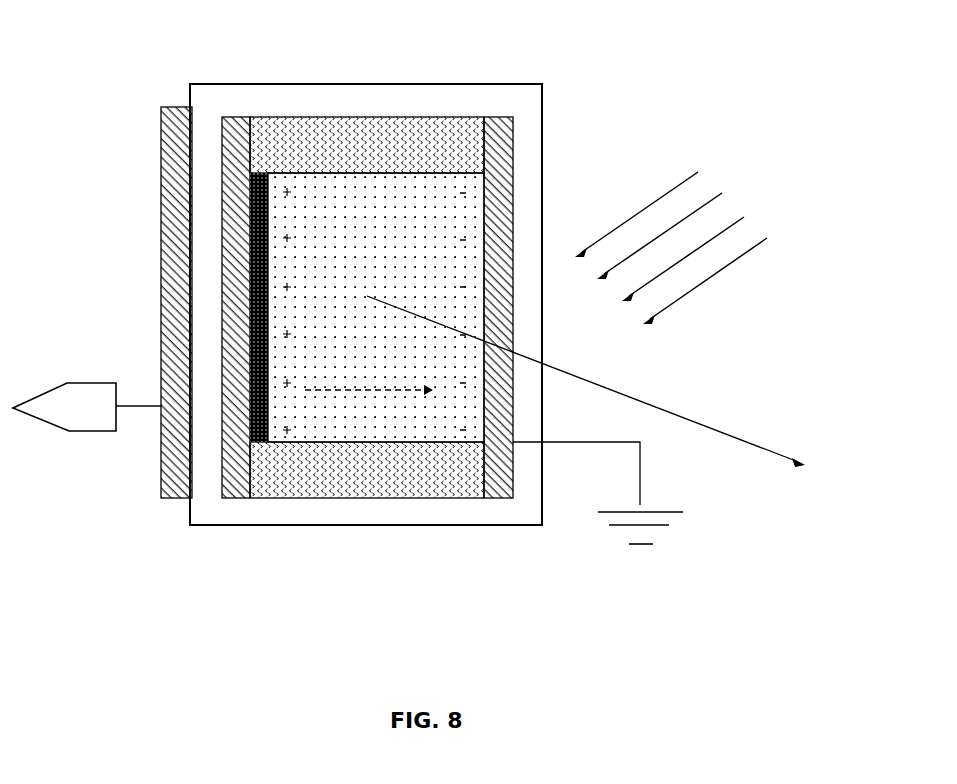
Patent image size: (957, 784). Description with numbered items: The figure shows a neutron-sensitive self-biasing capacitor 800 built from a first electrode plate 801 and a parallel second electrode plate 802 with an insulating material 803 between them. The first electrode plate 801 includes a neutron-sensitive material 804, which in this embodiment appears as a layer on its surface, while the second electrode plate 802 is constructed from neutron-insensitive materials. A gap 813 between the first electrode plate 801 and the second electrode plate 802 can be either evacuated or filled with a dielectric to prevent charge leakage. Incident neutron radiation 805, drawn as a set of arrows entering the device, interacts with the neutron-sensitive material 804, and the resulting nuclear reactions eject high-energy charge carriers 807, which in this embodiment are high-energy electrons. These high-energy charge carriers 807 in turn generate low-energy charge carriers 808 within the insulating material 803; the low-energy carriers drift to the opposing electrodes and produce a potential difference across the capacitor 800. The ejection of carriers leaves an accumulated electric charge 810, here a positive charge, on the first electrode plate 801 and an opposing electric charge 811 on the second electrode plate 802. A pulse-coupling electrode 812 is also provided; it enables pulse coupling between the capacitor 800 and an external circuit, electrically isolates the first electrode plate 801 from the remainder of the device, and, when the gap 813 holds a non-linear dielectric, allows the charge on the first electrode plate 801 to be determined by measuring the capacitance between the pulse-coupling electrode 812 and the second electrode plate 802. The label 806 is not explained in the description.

The neutron-sensitive self-biasing capacitor 800 is at (496, 281).
The first electrode plate 801 is at (487, 225).
The second electrode plate 802 is at (233, 140).
The insulating material 803 is at (380, 235).
The neutron-sensitive material 804 is at (250, 204).
The incident neutron radiation 805 is at (681, 239).
The charge generation region 806 is at (352, 280).
The high-energy charge carriers 807 is at (586, 381).
The low-energy charge carriers 808 is at (380, 420).
The accumulated electric charge 810 is at (463, 440).
The opposing electric charge 811 is at (287, 442).
The pulse-coupling electrode 812 is at (102, 302).
The gap 813 is at (350, 143).